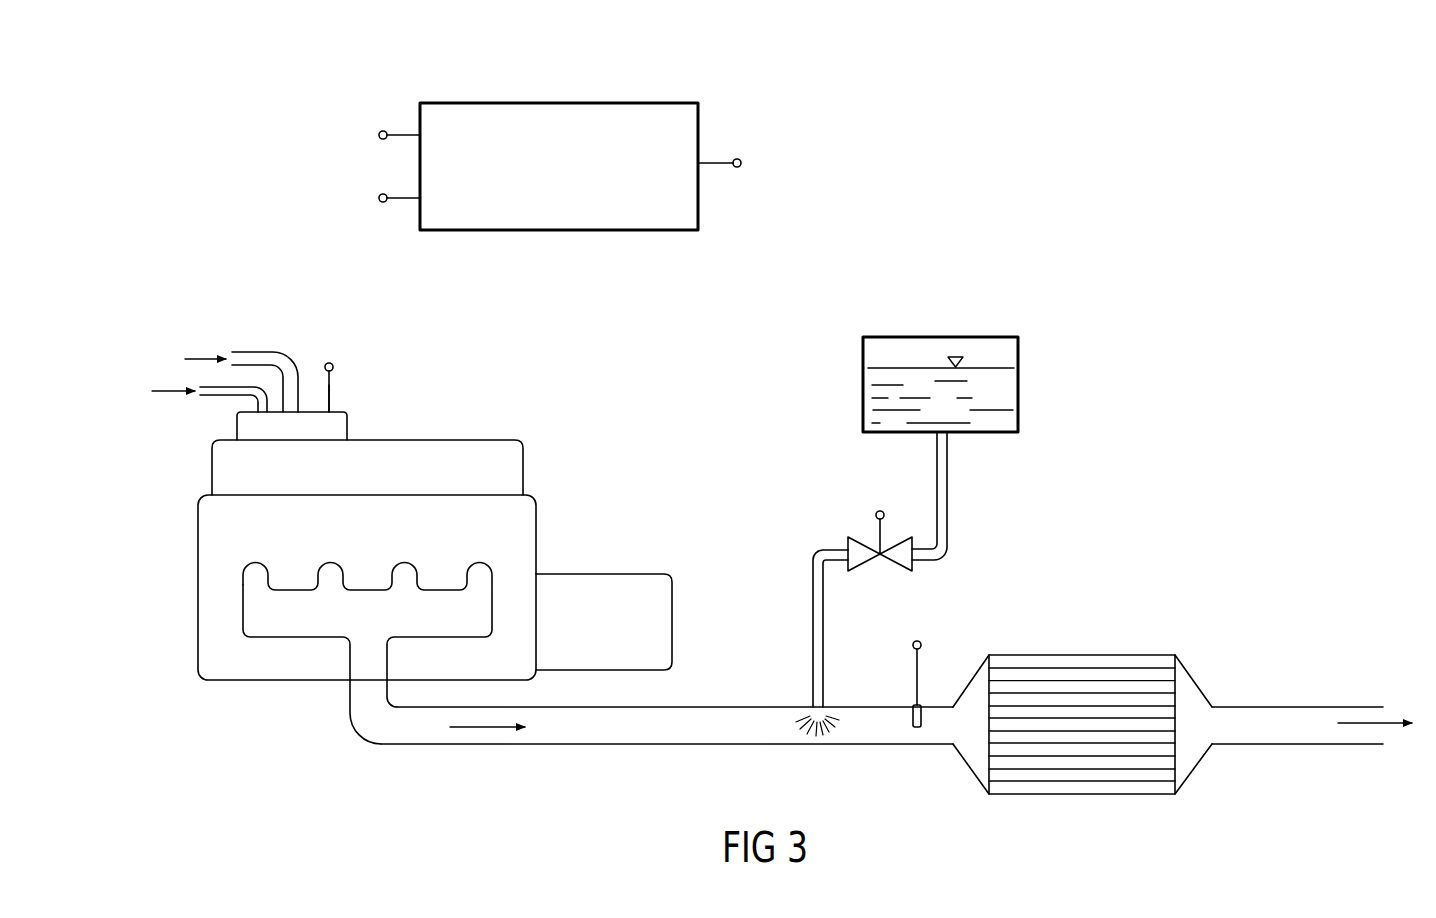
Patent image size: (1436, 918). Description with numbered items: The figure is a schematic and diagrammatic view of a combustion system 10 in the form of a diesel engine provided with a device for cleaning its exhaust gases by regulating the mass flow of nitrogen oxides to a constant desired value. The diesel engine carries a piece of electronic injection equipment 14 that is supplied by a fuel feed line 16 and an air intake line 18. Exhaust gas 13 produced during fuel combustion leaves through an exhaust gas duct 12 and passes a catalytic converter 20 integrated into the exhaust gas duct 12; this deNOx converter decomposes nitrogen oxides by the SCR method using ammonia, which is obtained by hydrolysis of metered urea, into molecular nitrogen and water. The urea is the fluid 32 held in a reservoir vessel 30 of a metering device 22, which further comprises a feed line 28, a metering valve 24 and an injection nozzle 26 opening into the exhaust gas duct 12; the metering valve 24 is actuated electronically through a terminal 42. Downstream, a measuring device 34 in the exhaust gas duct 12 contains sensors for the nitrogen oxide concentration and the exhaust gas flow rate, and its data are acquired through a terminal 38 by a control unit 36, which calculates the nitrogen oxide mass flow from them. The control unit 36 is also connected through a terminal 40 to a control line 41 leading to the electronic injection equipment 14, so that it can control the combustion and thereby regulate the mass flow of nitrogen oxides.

The combustion system 10 is at (235, 648).
The exhaust gas duct 12 is at (608, 745).
The exhaust gas 13 is at (488, 728).
The electronic injection equipment 14 is at (330, 425).
The fuel feed line 16 is at (217, 397).
The air intake line 18 is at (258, 350).
The catalytic converter 20 is at (1093, 678).
The metering device 22 is at (824, 483).
The metering valve 24 is at (898, 570).
The injection nozzle 26 is at (807, 710).
The feed line 28 is at (947, 483).
The reservoir vessel 30 is at (863, 397).
The fluid 32 is at (987, 388).
The measuring device 34 is at (912, 718).
The control unit 36 is at (552, 212).
The terminal 38 is at (378, 135).
The terminal 40 is at (378, 198).
The control line 41 is at (333, 390).
The terminal 42 is at (741, 163).